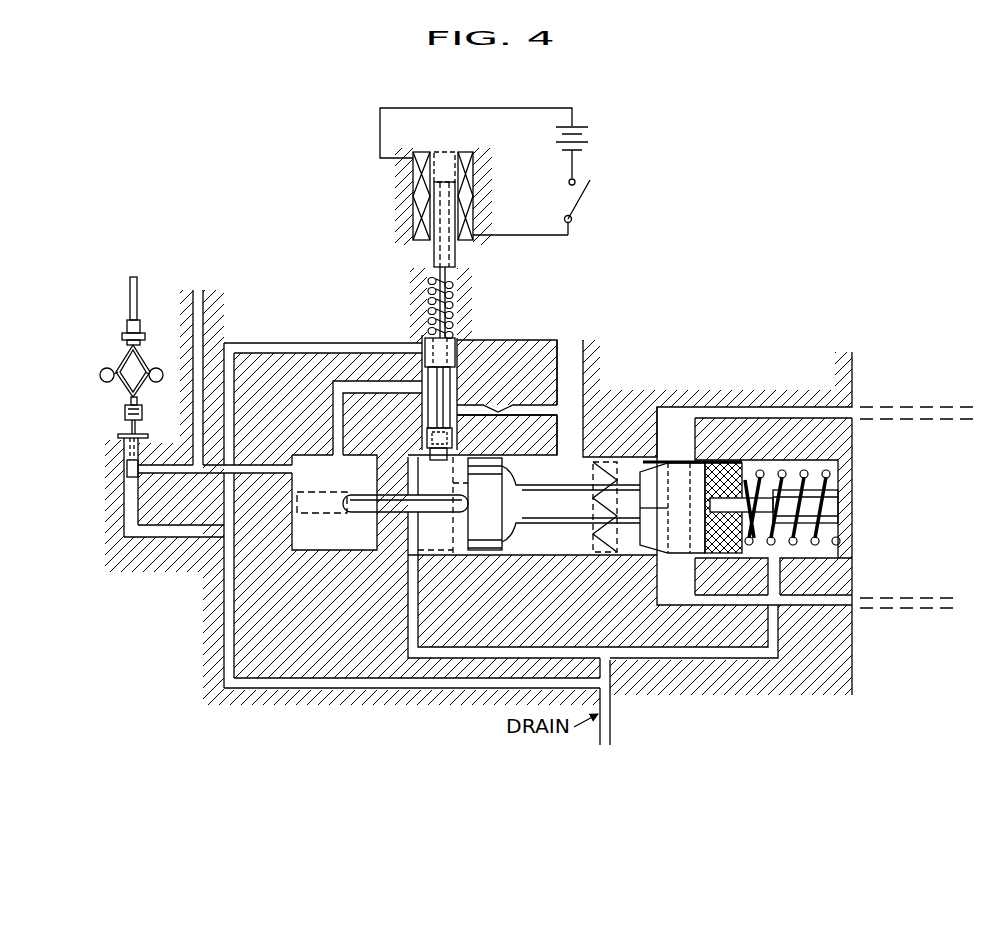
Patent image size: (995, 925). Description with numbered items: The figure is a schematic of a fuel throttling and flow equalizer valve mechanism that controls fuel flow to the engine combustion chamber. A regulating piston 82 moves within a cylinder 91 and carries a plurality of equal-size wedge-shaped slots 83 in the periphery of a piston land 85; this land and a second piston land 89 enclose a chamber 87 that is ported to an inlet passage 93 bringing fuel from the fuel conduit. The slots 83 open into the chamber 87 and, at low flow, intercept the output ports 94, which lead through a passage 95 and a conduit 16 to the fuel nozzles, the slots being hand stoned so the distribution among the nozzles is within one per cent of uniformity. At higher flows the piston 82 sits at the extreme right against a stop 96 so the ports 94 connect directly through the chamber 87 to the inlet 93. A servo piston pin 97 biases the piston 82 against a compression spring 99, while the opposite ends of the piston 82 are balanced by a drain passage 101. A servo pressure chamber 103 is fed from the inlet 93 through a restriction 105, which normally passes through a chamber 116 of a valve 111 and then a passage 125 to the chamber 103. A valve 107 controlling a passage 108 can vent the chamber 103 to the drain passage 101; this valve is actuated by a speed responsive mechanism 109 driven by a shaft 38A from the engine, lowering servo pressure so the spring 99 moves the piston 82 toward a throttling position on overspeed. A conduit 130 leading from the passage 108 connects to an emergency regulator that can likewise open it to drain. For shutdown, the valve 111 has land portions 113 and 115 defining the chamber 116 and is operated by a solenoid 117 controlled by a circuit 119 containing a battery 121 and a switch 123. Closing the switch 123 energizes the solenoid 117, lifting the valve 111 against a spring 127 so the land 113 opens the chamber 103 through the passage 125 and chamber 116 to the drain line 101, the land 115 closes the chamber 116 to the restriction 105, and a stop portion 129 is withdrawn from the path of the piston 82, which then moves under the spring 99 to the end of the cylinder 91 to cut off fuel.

The conduit 16 is at (883, 421).
The shaft 38A is at (130, 295).
The piston 82 is at (566, 509).
The wedge-shaped slots 83 is at (660, 490).
The piston land 85 is at (683, 460).
The chamber 87 is at (583, 452).
The piston land 89 is at (493, 474).
The cylinder 91 is at (536, 556).
The passage 93 is at (578, 368).
The output ports 94 is at (693, 447).
The passage 95 is at (738, 405).
The stop 96 is at (775, 512).
The servo piston pin 97 is at (362, 493).
The compression spring 99 is at (809, 471).
The drain passage 101 is at (323, 342).
The servo pressure chamber 103 is at (350, 542).
The restriction 105 is at (500, 407).
The valve 107 is at (125, 470).
The passage 108 is at (175, 471).
The speed responsive mechanism 109 is at (98, 373).
The valve 111 is at (460, 366).
The land portion 113 is at (423, 342).
The land portion 115 is at (418, 440).
The chamber 116 is at (418, 397).
The solenoid 117 is at (410, 198).
The circuit 119 is at (484, 105).
The battery 121 is at (592, 140).
The switch 123 is at (594, 206).
The passage 125 is at (333, 400).
The spring 127 is at (455, 302).
The stop portion 129 is at (433, 462).
The conduit 130 is at (205, 300).